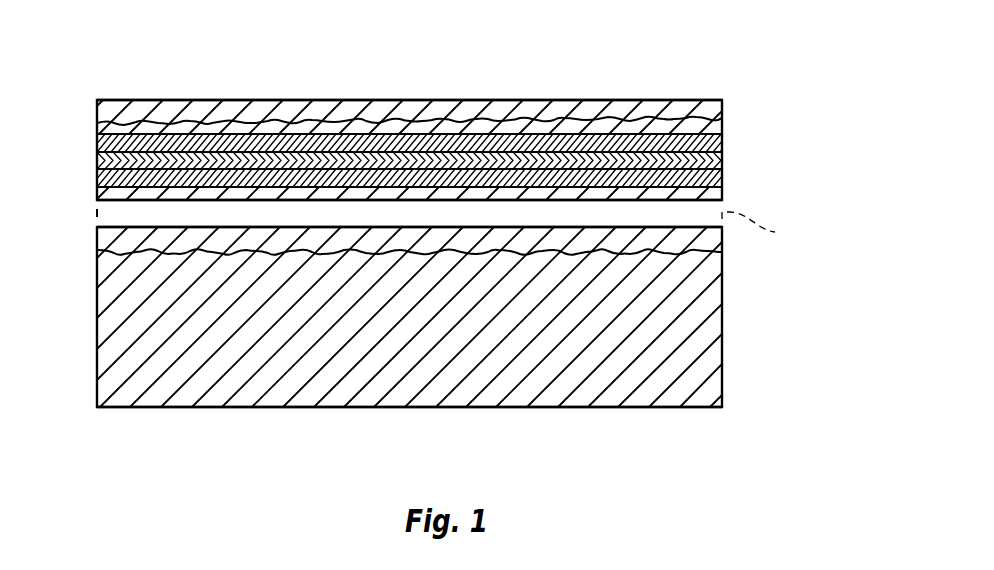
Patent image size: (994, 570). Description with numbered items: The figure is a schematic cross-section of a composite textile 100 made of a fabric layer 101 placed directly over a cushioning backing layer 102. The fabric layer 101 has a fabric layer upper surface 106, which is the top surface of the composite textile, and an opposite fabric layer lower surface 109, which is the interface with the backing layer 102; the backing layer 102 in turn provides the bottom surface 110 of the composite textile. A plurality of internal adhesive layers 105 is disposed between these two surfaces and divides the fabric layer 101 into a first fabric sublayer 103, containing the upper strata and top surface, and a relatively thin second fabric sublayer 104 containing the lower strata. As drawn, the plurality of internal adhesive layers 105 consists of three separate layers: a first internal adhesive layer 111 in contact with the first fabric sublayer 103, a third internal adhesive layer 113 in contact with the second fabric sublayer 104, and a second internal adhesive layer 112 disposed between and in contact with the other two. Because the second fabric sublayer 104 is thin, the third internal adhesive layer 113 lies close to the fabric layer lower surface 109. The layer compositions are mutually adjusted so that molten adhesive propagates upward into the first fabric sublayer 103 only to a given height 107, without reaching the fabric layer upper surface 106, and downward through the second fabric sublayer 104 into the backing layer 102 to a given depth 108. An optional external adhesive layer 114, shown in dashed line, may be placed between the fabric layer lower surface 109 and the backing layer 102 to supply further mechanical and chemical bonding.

The composite textile 100 is at (750, 91).
The fabric layer 101 is at (88, 100).
The backing layer 102 is at (722, 332).
The first fabric sublayer 103 is at (97, 124).
The second fabric sublayer 104 is at (97, 190).
The plurality of internal adhesive layers 105 is at (818, 95).
The fabric layer upper surface 106 is at (330, 100).
The given height 107 is at (482, 119).
The given depth 108 is at (537, 252).
The fabric layer lower surface 109 is at (565, 205).
The bottom surface 110 is at (180, 408).
The first internal adhesive layer 111 is at (722, 142).
The second internal adhesive layer 112 is at (722, 160).
The third internal adhesive layer 113 is at (722, 180).
The external adhesive layer 114 is at (778, 233).